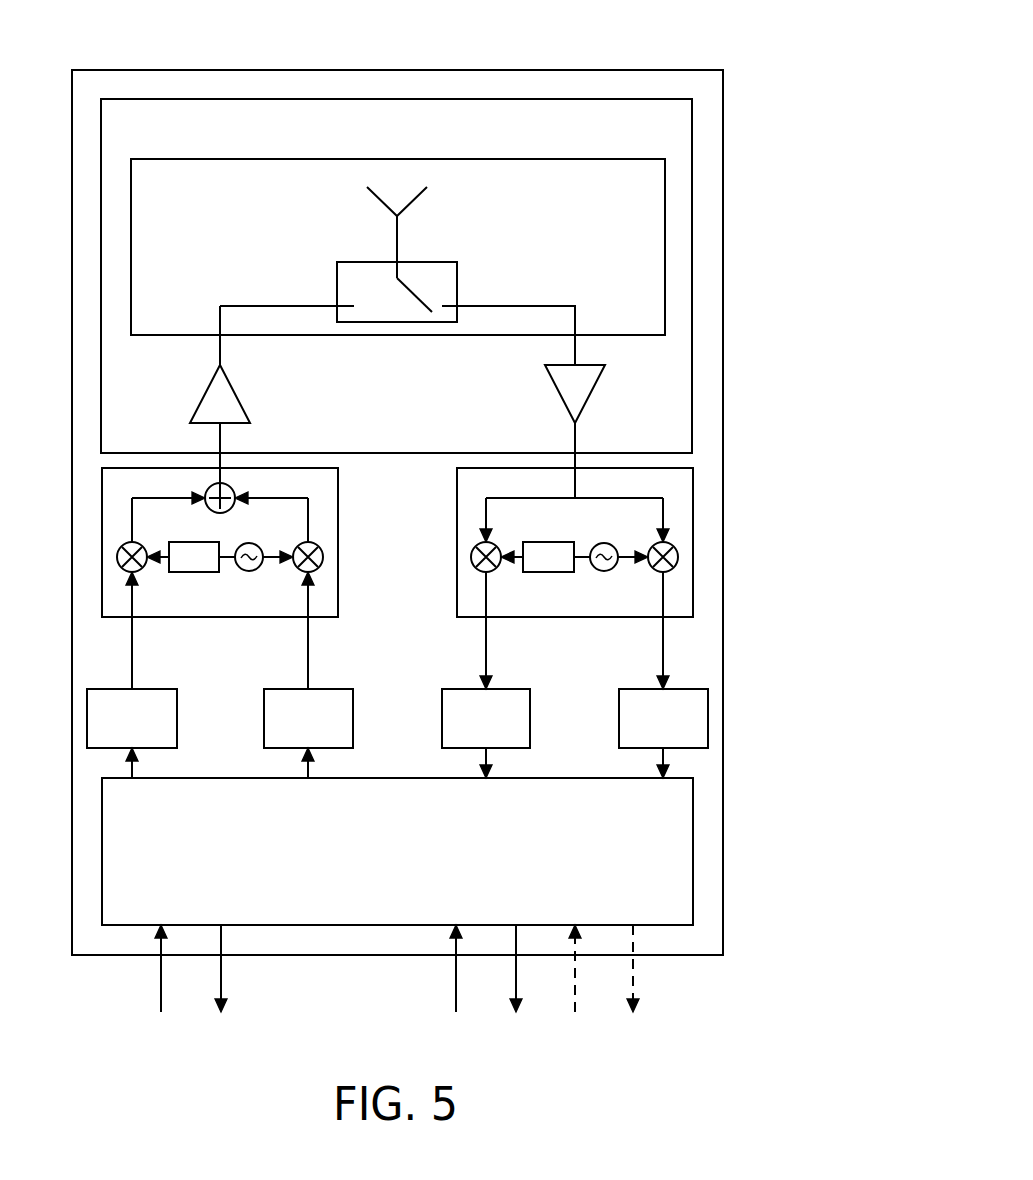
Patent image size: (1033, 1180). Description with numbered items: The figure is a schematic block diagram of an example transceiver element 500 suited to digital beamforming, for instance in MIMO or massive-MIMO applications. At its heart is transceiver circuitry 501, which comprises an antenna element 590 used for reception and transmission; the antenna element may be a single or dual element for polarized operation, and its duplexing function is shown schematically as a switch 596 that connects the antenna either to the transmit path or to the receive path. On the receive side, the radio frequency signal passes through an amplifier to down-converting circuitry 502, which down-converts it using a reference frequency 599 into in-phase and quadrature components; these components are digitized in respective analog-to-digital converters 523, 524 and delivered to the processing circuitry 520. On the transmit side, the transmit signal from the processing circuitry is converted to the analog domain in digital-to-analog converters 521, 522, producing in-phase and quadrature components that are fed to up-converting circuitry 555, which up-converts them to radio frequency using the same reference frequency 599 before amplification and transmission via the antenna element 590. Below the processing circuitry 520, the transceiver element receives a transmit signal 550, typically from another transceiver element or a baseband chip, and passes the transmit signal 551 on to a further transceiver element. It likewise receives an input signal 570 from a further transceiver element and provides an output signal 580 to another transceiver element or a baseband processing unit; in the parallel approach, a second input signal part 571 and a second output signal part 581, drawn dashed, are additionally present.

The transceiver element 500 is at (670, 70).
The transceiver circuitry 501 is at (396, 298).
The antenna element 590 is at (410, 206).
The switch 596 is at (457, 262).
The up-converting circuitry 555 is at (220, 542).
The down-converting circuitry 502 is at (575, 542).
The reference frequency 599 is at (597, 543).
The digital-to-analog converter 521 is at (132, 718).
The digital-to-analog converter 522 is at (308, 718).
The analog-to-digital converter 523 is at (486, 718).
The analog-to-digital converter 524 is at (663, 718).
The processing circuitry 520 is at (397, 836).
The transmit signal 550 is at (163, 983).
The transmit signal 551 is at (223, 983).
The input signal 570 is at (461, 983).
The output signal 580 is at (518, 983).
The second input signal part 571 is at (578, 983).
The second output signal part 581 is at (637, 983).